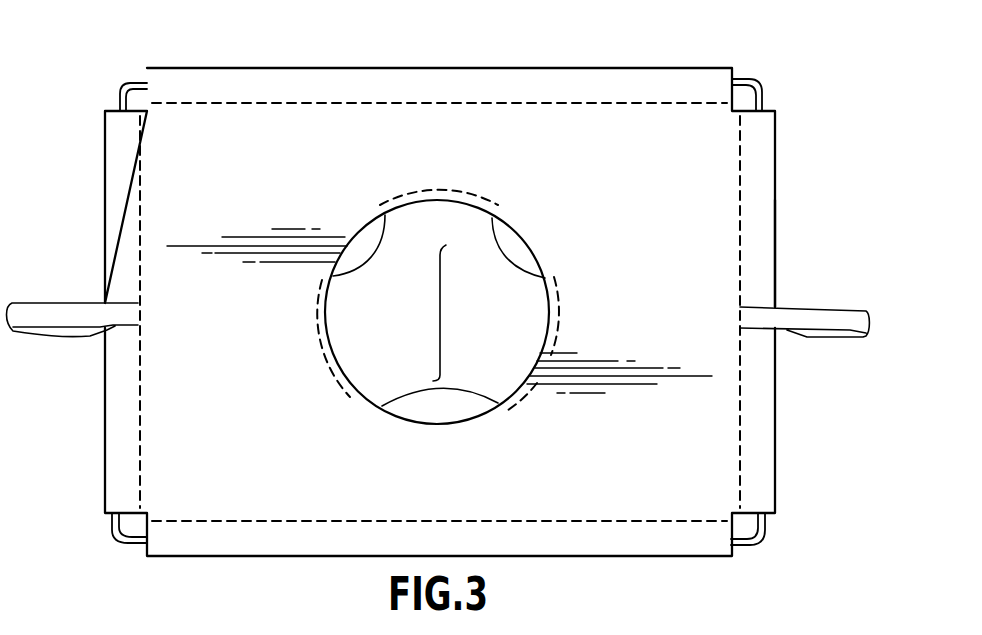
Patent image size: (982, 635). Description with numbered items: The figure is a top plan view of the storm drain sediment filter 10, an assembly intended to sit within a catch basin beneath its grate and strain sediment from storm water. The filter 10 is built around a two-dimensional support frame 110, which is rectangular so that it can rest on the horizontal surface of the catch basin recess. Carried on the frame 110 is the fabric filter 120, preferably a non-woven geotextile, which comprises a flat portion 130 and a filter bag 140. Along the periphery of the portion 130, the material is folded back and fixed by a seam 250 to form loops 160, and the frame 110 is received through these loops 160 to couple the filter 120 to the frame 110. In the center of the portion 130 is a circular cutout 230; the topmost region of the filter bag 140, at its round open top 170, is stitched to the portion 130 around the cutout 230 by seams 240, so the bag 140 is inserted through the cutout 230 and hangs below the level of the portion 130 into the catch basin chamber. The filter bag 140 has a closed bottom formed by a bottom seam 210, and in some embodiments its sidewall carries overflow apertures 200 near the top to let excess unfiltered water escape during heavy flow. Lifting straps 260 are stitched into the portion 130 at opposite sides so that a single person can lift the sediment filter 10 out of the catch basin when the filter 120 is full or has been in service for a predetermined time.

The storm drain sediment filter 10 is at (104, 63).
The support frame 110 is at (770, 535).
The filter 120 is at (276, 136).
The portion 130 is at (663, 306).
The filter bag 140 is at (386, 376).
The loops 160 is at (776, 280).
The open top 170 is at (505, 308).
The overflow apertures 200 is at (368, 267).
The bottom seam 210 is at (442, 340).
The circular cutout 230 is at (393, 214).
The seams 240 is at (472, 191).
The seam 250 is at (140, 182).
The lifting straps 260 is at (50, 302).